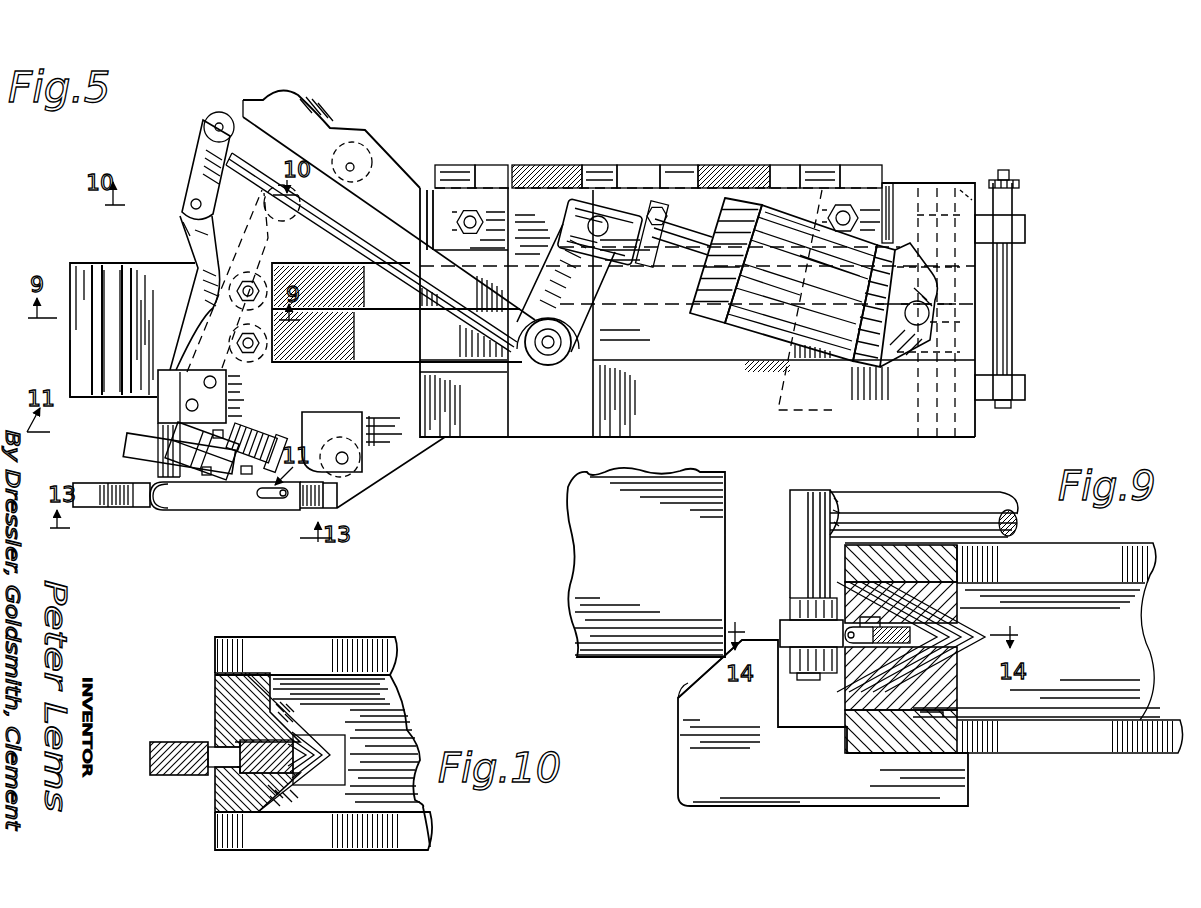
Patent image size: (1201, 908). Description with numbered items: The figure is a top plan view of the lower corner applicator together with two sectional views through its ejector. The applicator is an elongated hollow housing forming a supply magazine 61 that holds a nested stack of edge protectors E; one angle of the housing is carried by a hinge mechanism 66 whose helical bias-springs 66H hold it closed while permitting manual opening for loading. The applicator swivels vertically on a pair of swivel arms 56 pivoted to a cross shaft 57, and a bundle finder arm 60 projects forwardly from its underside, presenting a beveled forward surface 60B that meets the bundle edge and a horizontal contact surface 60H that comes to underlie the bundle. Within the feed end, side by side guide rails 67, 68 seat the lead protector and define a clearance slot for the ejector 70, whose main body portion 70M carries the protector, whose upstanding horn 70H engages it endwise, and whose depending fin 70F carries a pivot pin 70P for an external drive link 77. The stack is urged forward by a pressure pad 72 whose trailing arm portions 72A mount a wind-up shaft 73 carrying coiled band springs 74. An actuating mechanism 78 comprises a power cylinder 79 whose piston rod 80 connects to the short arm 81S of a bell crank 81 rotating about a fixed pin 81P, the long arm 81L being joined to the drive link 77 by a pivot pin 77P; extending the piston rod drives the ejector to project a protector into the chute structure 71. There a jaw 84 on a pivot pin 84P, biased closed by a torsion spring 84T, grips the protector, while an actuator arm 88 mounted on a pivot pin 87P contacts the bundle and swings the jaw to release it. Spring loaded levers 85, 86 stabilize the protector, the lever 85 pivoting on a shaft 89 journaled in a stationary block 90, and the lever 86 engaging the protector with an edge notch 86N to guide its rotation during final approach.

In FIG. 5, the swivel arms 56 is at (1023, 233).
In FIG. 5, the cross shaft 57 is at (1012, 420).
In FIG. 5, the bundle finder arm 60 is at (130, 292).
In FIG. 9, the bundle finder arm 60 is at (804, 786).
In FIG. 5, the beveled forward surface 60B is at (72, 352).
In FIG. 9, the beveled forward surface 60B is at (688, 680).
In FIG. 5, the horizontal contact surface 60H is at (113, 331).
In FIG. 9, the horizontal contact surface 60H is at (765, 630).
In FIG. 5, the supply magazine 61 is at (697, 366).
In FIG. 5, the hinge mechanism 66 is at (601, 175).
In FIG. 5, the helical bias-springs 66H is at (742, 167).
In FIG. 9, the guide rail 67 is at (856, 597).
In FIG. 10, the guide rail 67 is at (225, 715).
In FIG. 9, the guide rail 68 is at (859, 689).
In FIG. 10, the guide rail 68 is at (223, 797).
In FIG. 5, the ejector 70 is at (200, 293).
In FIG. 9, the ejector 70 is at (910, 637).
In FIG. 10, the ejector 70 is at (268, 755).
In FIG. 5, the depending integral fin 70F is at (183, 226).
In FIG. 9, the depending integral fin 70F is at (797, 640).
In FIG. 10, the depending integral fin 70F is at (170, 758).
In FIG. 5, the upstanding horn 70H is at (293, 206).
In FIG. 5, the main body portion 70M is at (227, 281).
In FIG. 5, the pivot pin 70P is at (190, 203).
In FIG. 5, the chute structure 71 is at (205, 426).
In FIG. 5, the pressure pad 72 is at (888, 180).
In FIG. 5, the trailing arm portions 72A is at (976, 186).
In FIG. 5, the wind-up shaft 73 is at (966, 353).
In FIG. 5, the coiled band springs 74 is at (966, 330).
In FIG. 5, the drive link 77 is at (200, 169).
In FIG. 9, the drive link 77 is at (790, 606).
In FIG. 5, the pivot pin 77P is at (218, 118).
In FIG. 9, the pivot pin 77P is at (808, 681).
In FIG. 5, the actuating mechanism 78 is at (806, 226).
In FIG. 5, the power cylinder 79 is at (850, 294).
In FIG. 5, the piston rod 80 is at (668, 238).
In FIG. 5, the bell crank 81 is at (537, 368).
In FIG. 5, the long arm 81L is at (432, 286).
In FIG. 9, the long arm 81L is at (1000, 510).
In FIG. 5, the fixed pin 81P is at (548, 350).
In FIG. 5, the short arm 81S is at (597, 271).
In FIG. 5, the jaw 84 is at (200, 472).
In FIG. 5, the pivot pin 84P is at (262, 493).
In FIG. 5, the torsion spring 84T is at (281, 440).
In FIG. 5, the lever 85 is at (189, 505).
In FIG. 5, the lever 86 is at (143, 508).
In FIG. 5, the edge notch 86N is at (118, 508).
In FIG. 5, the pivot pin 87P is at (233, 429).
In FIG. 5, the actuator arm 88 is at (138, 441).
In FIG. 5, the shaft 89 is at (348, 458).
In FIG. 5, the stationary block 90 is at (352, 436).
In FIG. 9, the edge protector E is at (930, 691).
In FIG. 10, the edge protector E is at (330, 763).